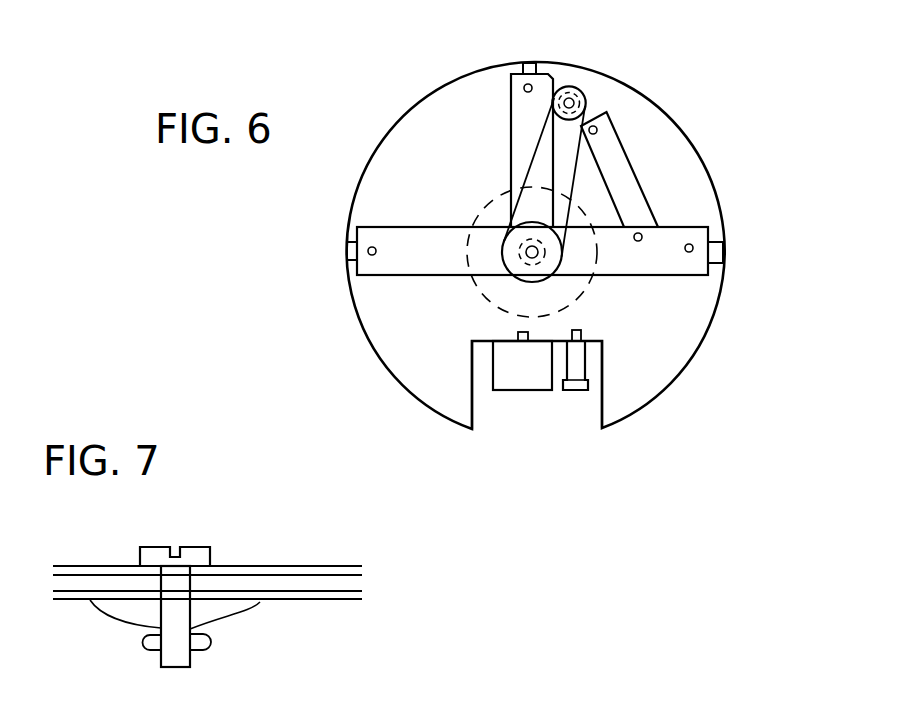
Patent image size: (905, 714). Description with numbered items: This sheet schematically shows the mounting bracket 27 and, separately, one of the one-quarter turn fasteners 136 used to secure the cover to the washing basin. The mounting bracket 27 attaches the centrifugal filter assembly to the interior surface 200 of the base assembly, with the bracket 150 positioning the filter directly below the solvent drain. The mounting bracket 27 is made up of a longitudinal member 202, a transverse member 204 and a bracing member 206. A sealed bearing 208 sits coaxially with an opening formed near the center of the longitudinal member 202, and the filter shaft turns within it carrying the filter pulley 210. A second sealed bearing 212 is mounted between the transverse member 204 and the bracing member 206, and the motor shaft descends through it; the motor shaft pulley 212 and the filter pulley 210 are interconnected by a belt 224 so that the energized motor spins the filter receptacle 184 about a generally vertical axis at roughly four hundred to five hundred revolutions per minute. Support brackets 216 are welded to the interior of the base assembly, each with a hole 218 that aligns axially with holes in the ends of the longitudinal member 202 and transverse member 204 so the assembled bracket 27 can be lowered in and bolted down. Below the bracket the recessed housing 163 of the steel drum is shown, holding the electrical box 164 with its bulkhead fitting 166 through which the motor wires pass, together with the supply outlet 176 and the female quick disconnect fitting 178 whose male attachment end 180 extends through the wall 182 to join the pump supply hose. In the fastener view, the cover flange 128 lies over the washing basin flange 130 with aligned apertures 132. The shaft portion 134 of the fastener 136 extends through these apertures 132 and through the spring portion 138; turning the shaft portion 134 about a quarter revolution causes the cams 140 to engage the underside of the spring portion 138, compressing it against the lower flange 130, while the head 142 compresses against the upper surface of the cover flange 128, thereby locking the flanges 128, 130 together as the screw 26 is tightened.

In FIG. 6, the interior surface 200 is at (684, 157).
In FIG. 6, the longitudinal member 202 is at (665, 238).
In FIG. 6, the transverse member 204 is at (520, 130).
In FIG. 6, the bracing member 206 is at (608, 140).
In FIG. 6, the sealed bearing 208 is at (470, 226).
In FIG. 6, the filter pulley 210 is at (552, 258).
In FIG. 6, the second sealed bearing 212 is at (569, 86).
In FIG. 6, the support bracket 216 is at (347, 253).
In FIG. 6, the hole 218 is at (368, 255).
In FIG. 6, the belt 224 is at (530, 168).
In FIG. 6, the filter receptacle 184 is at (483, 213).
In FIG. 6, the bracket 150 is at (393, 252).
In FIG. 6, the mounting bracket 27 is at (398, 278).
In FIG. 6, the bulkhead fitting 166 is at (518, 334).
In FIG. 6, the electrical box 164 is at (512, 382).
In FIG. 6, the supply outlet 176 is at (575, 392).
In FIG. 6, the female quick disconnect type hydraulic fitting 178 is at (570, 392).
In FIG. 6, the male attachment end 180 is at (583, 331).
In FIG. 6, the wall 182 is at (597, 339).
In FIG. 6, the recessed housing 163 is at (600, 414).
In FIG. 7, the cover flange 128 is at (335, 568).
In FIG. 7, the washing basin flange 130 is at (310, 605).
In FIG. 7, the one-quarter turn fastener 136 is at (141, 537).
In FIG. 7, the screw 26 is at (188, 548).
In FIG. 7, the head 142 is at (200, 547).
In FIG. 7, the aperture 132 is at (212, 566).
In FIG. 7, the shaft portion 134 is at (168, 616).
In FIG. 7, the spring portion 138 is at (227, 617).
In FIG. 7, the cam 140 is at (147, 644).